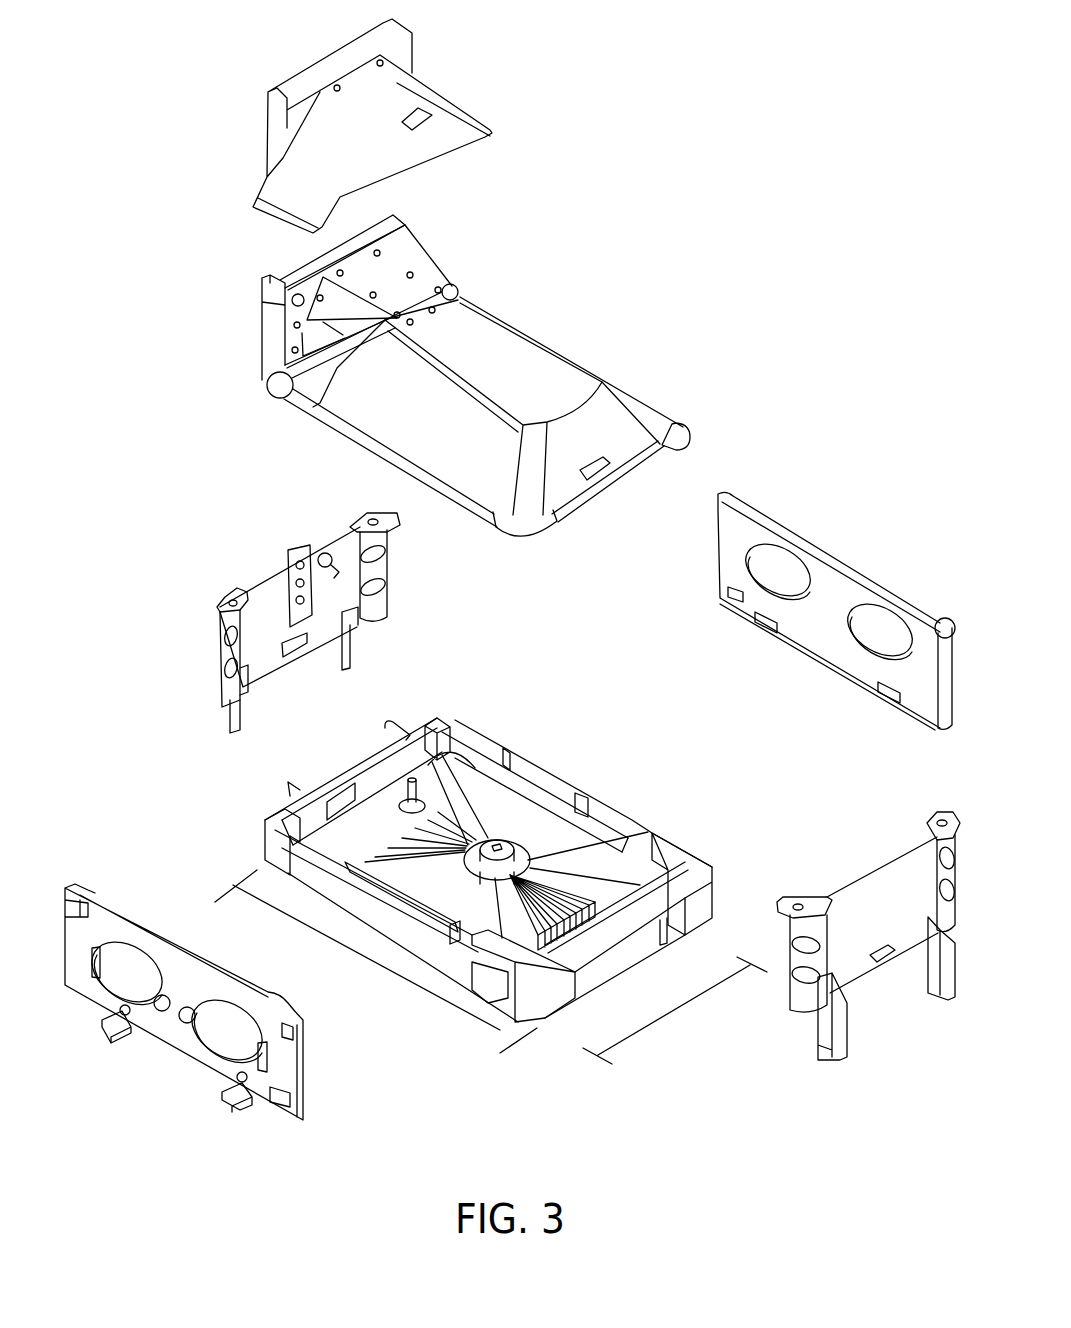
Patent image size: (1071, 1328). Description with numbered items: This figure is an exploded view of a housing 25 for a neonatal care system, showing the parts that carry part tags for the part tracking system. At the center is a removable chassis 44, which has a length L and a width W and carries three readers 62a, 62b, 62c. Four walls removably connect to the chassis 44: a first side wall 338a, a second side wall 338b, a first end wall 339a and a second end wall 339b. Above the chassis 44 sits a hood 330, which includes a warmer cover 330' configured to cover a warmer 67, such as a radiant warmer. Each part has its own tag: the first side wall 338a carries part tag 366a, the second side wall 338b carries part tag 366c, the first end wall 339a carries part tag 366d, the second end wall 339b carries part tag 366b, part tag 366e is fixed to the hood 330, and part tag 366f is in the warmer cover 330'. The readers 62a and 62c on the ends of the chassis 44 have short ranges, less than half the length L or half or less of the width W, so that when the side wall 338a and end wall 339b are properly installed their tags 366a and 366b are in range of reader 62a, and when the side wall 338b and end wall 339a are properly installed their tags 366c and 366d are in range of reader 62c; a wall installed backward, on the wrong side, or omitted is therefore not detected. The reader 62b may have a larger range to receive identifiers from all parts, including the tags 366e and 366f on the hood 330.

The housing 25 is at (790, 423).
The chassis 44 is at (683, 860).
The reader 62a is at (577, 967).
The part reader 62b is at (513, 847).
The reader 62c is at (437, 720).
The warmer 67 is at (417, 283).
The hood 330 is at (483, 414).
The warmer cover 330' is at (375, 126).
The first side wall 338a is at (188, 1043).
The second side wall 338b is at (860, 570).
The first end wall 339a is at (265, 590).
The second end wall 339b is at (878, 883).
The part tag 366a is at (282, 1100).
The part tag 366b is at (892, 967).
The part tag 366c is at (737, 597).
The part tag 366d is at (298, 657).
The part tag 366e is at (597, 467).
The part tag 366f is at (422, 122).
The length of the chassis L is at (372, 968).
The width of the chassis W is at (687, 1008).